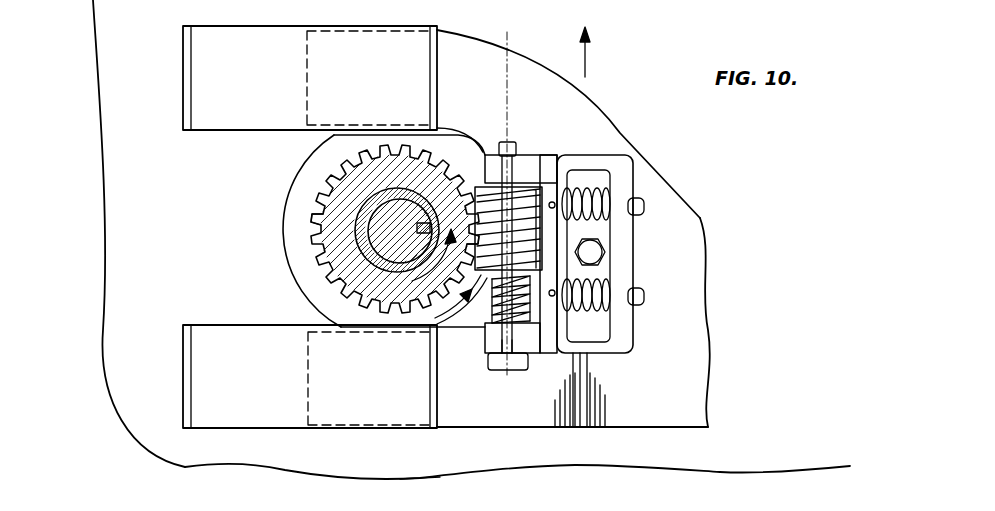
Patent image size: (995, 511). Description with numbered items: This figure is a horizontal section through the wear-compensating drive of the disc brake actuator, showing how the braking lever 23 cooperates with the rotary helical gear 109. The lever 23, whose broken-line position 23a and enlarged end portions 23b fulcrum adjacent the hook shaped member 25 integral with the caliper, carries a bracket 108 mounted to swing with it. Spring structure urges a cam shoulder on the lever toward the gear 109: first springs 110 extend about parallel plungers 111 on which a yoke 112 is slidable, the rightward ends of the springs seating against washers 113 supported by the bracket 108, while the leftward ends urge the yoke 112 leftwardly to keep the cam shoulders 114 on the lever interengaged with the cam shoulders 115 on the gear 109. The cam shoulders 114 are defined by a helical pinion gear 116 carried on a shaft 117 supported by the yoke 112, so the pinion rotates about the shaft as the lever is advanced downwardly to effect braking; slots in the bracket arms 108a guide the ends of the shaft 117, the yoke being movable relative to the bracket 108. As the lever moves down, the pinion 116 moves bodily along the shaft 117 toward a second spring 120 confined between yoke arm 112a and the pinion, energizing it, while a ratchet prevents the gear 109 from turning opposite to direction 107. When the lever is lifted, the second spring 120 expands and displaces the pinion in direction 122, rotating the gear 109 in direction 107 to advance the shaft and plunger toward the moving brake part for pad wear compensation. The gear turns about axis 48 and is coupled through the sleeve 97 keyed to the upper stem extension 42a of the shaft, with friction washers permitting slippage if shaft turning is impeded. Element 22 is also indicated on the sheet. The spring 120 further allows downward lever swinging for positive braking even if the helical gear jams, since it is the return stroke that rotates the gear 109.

The shaft 22 is at (420, 494).
The lever 23 is at (705, 340).
The broken line position 23a is at (307, 107).
The enlarged end portions 23b is at (360, 417).
The hook shaped member 25 is at (250, 490).
The upper stem extension 42a is at (377, 242).
The axis 48 is at (517, 487).
The sleeve 97 is at (365, 213).
The direction 107 is at (437, 283).
The bracket 108 is at (628, 232).
The bracket arms 108a is at (569, 157).
The helical gear 109 is at (313, 238).
The first springs 110 is at (566, 190).
The plungers 111 is at (644, 204).
The yoke 112 is at (545, 340).
The yoke arm 112a is at (512, 358).
The washers 113 is at (607, 195).
The cam shoulders 114 is at (540, 160).
The cam shoulders 115 is at (333, 273).
The helical pinion gear 116 is at (493, 297).
The shaft 117 is at (503, 142).
The second spring 120 is at (490, 357).
The direction 122 is at (585, 58).